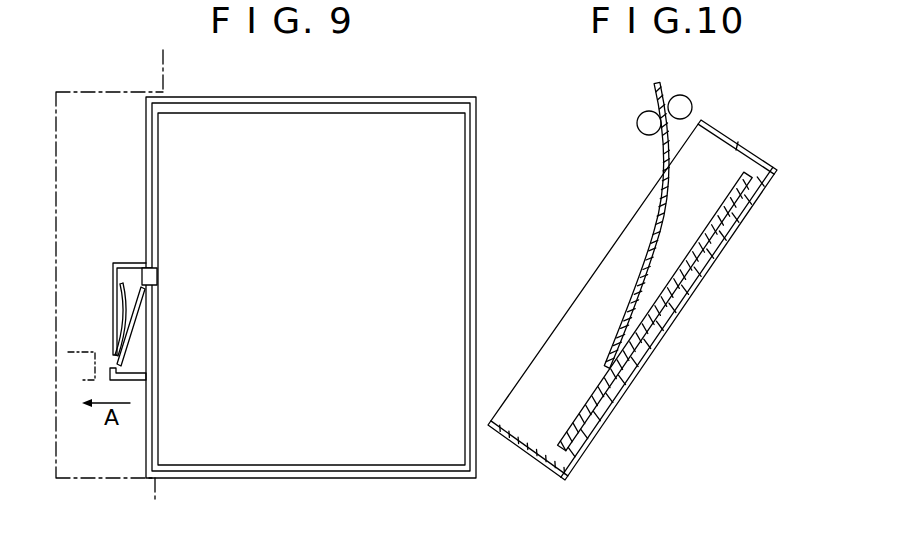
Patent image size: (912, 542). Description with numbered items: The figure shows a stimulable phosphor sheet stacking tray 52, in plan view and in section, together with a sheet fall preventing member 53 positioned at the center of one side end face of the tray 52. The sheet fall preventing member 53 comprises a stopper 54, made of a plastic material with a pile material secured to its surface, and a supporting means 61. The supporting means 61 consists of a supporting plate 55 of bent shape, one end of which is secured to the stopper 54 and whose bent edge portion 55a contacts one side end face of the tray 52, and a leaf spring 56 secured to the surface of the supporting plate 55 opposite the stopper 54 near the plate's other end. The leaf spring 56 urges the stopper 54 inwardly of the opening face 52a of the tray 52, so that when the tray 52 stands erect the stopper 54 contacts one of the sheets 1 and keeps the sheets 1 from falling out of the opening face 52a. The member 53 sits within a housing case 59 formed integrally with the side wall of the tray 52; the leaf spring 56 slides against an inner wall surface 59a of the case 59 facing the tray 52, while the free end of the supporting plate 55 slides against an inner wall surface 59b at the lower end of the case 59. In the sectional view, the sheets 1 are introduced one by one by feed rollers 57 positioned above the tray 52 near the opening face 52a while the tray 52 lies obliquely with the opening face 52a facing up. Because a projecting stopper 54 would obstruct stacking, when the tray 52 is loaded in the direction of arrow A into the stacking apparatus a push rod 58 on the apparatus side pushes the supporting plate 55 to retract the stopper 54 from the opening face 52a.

In FIG. 9, the stimulable phosphor sheets 1 is at (368, 133).
In FIG. 10, the stimulable phosphor sheets 1 is at (662, 150).
In FIG. 9, the tray 52 is at (478, 150).
In FIG. 10, the tray 52 is at (737, 143).
In FIG. 10, the opening face 52a is at (506, 398).
In FIG. 9, the sheet fall preventing member 53 is at (133, 272).
In FIG. 9, the stopper 54 is at (157, 272).
In FIG. 10, the stopper 54 is at (614, 268).
In FIG. 9, the supporting plate 55 is at (133, 358).
In FIG. 9, the bent edge portion 55a is at (143, 312).
In FIG. 9, the leaf spring 56 is at (113, 279).
In FIG. 10, the feed rollers 57 is at (693, 108).
In FIG. 9, the push rod 58 is at (95, 372).
In FIG. 9, the housing case 59 is at (118, 303).
In FIG. 9, the inner wall surface 59a is at (118, 345).
In FIG. 9, the inner wall surface at the lower end 59b is at (133, 370).
In FIG. 9, the supporting means 61 is at (132, 320).